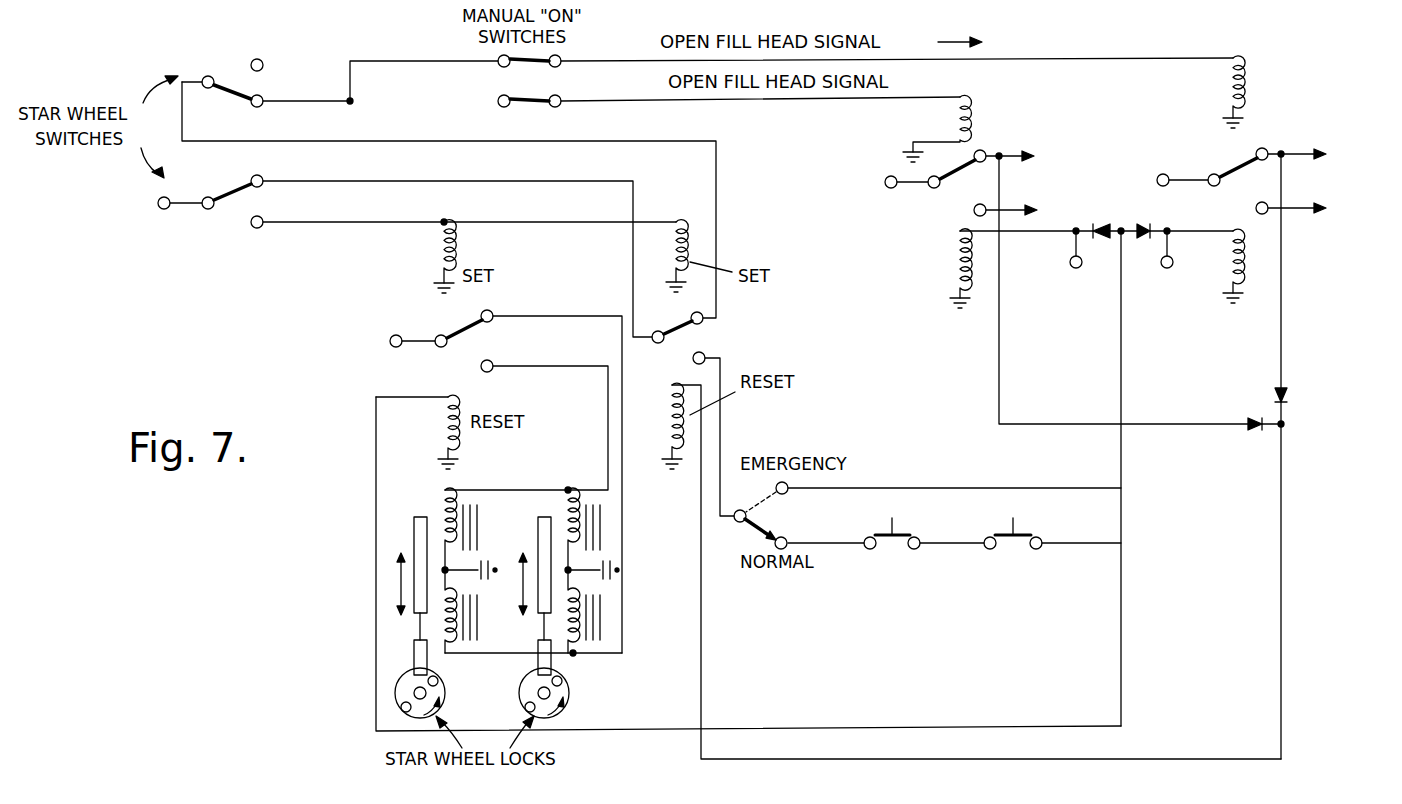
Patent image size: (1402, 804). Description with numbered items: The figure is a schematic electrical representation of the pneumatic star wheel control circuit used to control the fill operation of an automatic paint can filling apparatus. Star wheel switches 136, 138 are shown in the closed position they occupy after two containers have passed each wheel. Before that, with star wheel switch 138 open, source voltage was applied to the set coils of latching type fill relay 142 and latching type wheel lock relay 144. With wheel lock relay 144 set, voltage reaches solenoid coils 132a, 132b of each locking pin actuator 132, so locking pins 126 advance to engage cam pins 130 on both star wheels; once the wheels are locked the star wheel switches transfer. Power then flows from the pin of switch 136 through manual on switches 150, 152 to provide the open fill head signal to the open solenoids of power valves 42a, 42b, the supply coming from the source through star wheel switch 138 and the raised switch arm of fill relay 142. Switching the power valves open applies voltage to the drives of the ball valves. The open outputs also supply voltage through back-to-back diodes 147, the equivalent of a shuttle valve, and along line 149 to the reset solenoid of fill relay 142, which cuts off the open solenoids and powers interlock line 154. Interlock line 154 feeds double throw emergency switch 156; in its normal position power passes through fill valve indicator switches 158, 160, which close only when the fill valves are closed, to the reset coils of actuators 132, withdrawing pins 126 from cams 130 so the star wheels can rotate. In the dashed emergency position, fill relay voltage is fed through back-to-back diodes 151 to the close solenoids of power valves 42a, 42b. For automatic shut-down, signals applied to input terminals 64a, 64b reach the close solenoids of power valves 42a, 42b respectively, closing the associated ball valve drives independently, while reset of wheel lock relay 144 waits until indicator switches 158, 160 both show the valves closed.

The star wheel switch 136 is at (224, 80).
The star wheel switch 138 is at (236, 196).
The manual on switch 150 is at (507, 67).
The manual on switch 152 is at (508, 107).
The power valve 42a is at (986, 149).
The power valve 42b is at (1215, 149).
The back-to-back diodes 151 is at (1126, 228).
The input terminal 64a is at (1076, 261).
The input terminal 64b is at (1168, 261).
The back-to-back diodes 147 is at (1273, 397).
The wheel lock relay 144 is at (435, 322).
The fill relay 142 is at (661, 322).
The interlock line 154 is at (720, 418).
The solenoid coil 132a is at (433, 518).
The solenoid coil 132b is at (566, 502).
The locking pin actuator 132 is at (386, 578).
The locking pin 126 is at (533, 658).
The cam pin 130 is at (520, 692).
The emergency switch 156 is at (768, 512).
The fill valve indicator switch 158 is at (890, 548).
The fill valve indicator switch 160 is at (1012, 548).
The line 149 is at (1281, 584).